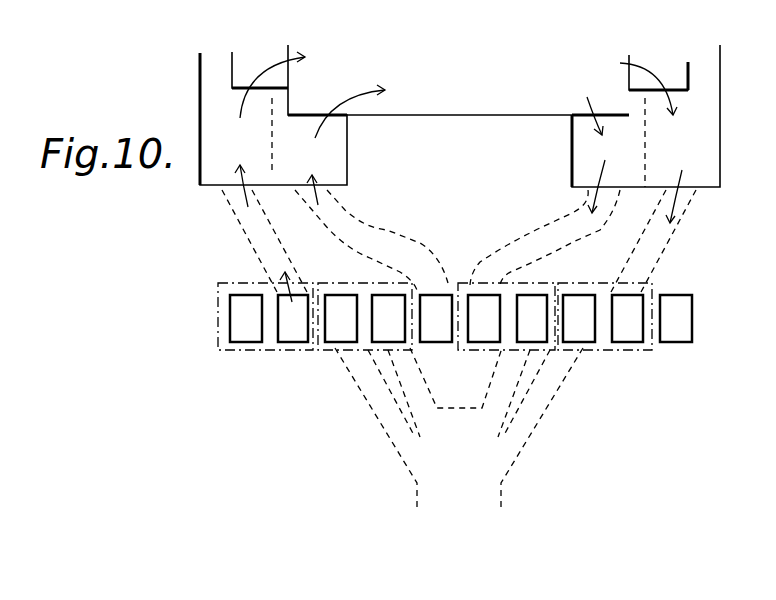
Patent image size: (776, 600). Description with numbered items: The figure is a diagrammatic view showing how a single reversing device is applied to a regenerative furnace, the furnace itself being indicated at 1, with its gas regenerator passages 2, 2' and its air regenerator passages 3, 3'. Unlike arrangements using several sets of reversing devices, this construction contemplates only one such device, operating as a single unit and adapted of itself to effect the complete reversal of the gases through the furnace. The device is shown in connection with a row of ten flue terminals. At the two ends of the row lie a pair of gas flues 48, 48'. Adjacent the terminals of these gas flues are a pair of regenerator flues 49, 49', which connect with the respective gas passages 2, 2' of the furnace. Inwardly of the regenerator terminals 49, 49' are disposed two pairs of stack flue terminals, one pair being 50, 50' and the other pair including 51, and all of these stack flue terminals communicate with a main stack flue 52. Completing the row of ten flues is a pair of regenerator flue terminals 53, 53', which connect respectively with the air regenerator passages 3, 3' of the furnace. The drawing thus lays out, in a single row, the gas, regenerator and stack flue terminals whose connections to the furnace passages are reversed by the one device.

The furnace 1 is at (435, 113).
The gas regenerator passage 2 is at (267, 129).
The air regenerator passage 3 is at (341, 145).
The gas regenerator passage 2' is at (657, 143).
The air regenerator passage 3' is at (603, 155).
The gas flue 48 is at (215, 318).
The gas flue 48' is at (701, 318).
The regenerator flue 49 is at (241, 241).
The regenerator flue 49' is at (653, 293).
The stack flue terminal 50 is at (325, 347).
The stack flue terminal 50' is at (598, 347).
The stack flue terminal 51 is at (387, 298).
The main stack flue 52 is at (458, 510).
The regenerator flue terminal 53 is at (371, 240).
The regenerator flue terminal 53' is at (545, 237).